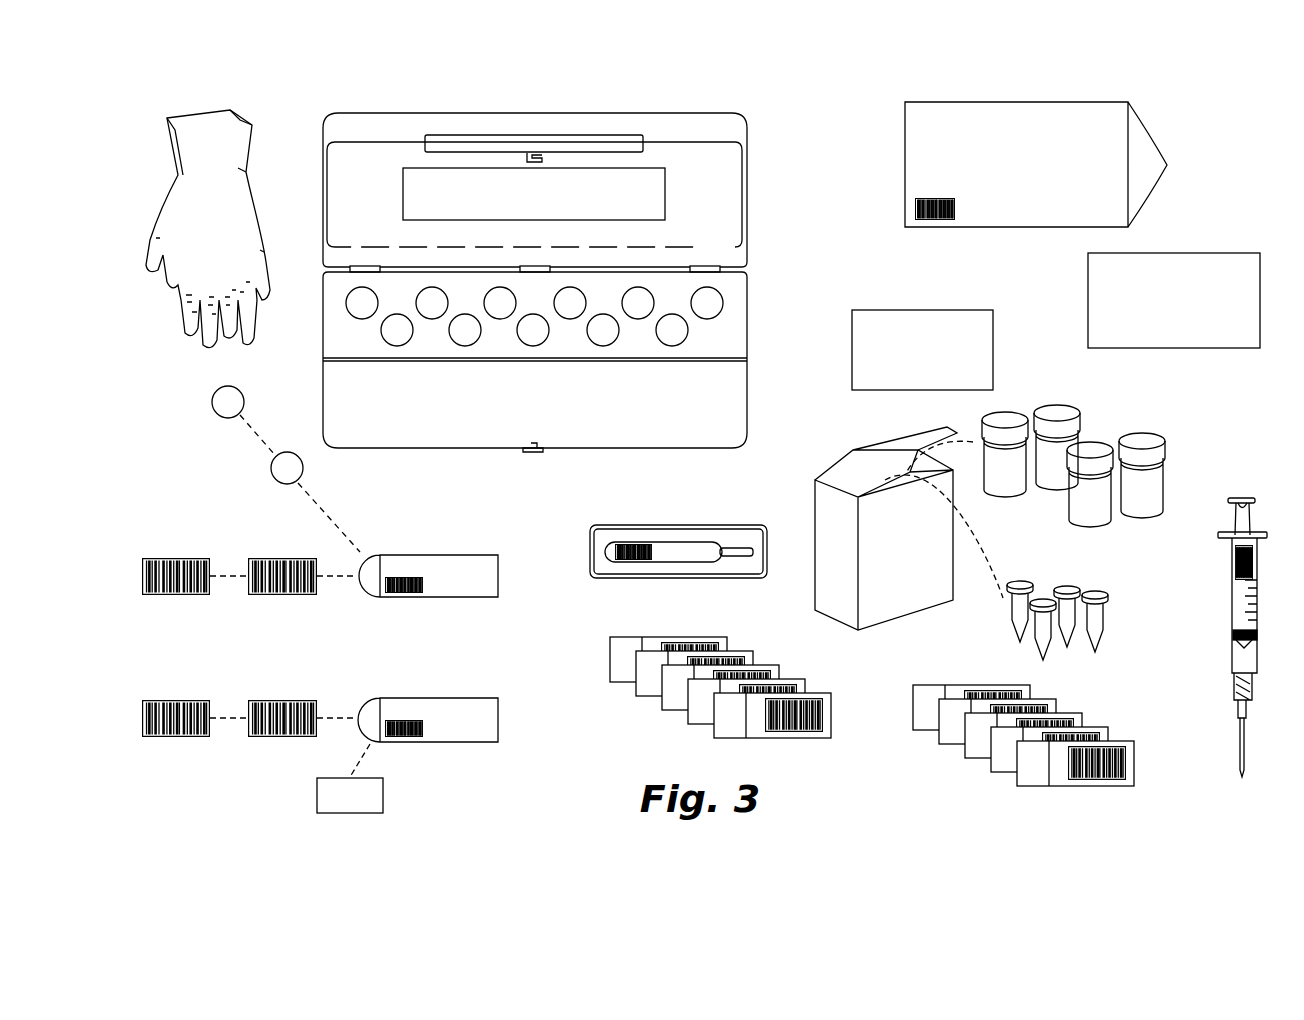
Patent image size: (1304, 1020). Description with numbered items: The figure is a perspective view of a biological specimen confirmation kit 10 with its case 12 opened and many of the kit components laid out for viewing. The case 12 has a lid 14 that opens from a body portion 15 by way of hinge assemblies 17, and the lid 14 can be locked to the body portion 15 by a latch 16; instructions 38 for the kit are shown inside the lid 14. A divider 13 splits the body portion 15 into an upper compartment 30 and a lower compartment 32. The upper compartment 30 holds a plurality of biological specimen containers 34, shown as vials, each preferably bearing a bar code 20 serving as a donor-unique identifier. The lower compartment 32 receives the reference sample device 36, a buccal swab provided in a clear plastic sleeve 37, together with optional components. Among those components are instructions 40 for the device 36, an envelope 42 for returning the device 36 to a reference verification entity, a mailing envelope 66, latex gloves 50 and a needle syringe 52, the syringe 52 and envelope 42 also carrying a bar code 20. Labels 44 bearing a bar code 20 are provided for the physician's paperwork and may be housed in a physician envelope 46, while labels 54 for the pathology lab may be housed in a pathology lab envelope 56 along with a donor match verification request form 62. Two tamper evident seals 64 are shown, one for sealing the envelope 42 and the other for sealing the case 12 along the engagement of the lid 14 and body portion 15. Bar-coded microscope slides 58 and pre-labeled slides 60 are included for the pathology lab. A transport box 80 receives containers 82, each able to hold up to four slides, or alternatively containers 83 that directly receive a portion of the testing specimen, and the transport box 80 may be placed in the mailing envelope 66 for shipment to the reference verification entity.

The biological specimen confirmation kit 10 is at (1197, 108).
The case 12 is at (747, 322).
The divider 13 is at (700, 363).
The lid 14 is at (747, 207).
The body portion 15 is at (747, 395).
The latch 16 is at (539, 266).
The hinge assemblies 17 is at (360, 268).
The bar code 20 is at (181, 596).
The upper compartment 30 is at (350, 331).
The lower compartment 32 is at (356, 407).
The biological specimen containers 34 is at (346, 301).
The reference sample device 36 is at (675, 542).
The clear plastic sleeve 37 is at (603, 525).
The instructions 38 is at (665, 186).
The instructions 40 is at (1223, 253).
The envelope 42 is at (905, 113).
The labels 44 is at (176, 558).
The envelope 46 is at (395, 554).
The latex gloves 50 is at (202, 212).
The needle syringe 52 is at (1232, 630).
The labels 54 is at (176, 700).
The envelope 56 is at (395, 697).
The microscope slides 58 is at (699, 732).
The slides 60 is at (1122, 711).
The donor match verification request form 62 is at (383, 797).
The tamper evident seals 64 is at (212, 403).
The mailing envelope 66 is at (963, 310).
The transport box 80 is at (898, 598).
The containers 82 is at (1000, 495).
The containers 83 is at (1020, 615).